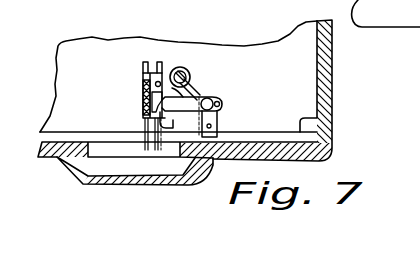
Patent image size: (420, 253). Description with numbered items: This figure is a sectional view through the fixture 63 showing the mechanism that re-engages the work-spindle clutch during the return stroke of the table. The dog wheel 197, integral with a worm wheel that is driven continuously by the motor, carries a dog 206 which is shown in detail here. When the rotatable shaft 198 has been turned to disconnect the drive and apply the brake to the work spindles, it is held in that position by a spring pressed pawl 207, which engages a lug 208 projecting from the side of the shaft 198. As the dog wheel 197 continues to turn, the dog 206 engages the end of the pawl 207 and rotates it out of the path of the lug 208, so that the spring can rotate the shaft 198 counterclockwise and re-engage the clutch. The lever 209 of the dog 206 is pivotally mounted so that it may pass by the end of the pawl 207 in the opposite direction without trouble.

The fixture 63 is at (333, 77).
The dog wheel 197 is at (155, 57).
The rotatable shaft 198 is at (182, 66).
The dog 206 is at (143, 91).
The spring pressed pawl 207 is at (188, 100).
The lug 208 is at (196, 96).
The lever 209 is at (145, 130).